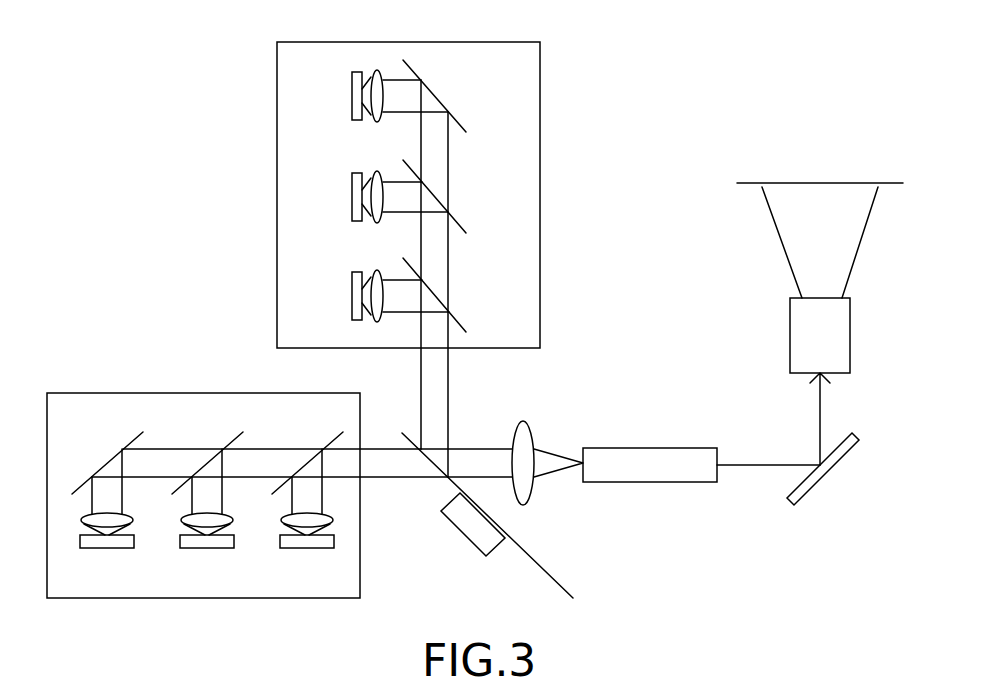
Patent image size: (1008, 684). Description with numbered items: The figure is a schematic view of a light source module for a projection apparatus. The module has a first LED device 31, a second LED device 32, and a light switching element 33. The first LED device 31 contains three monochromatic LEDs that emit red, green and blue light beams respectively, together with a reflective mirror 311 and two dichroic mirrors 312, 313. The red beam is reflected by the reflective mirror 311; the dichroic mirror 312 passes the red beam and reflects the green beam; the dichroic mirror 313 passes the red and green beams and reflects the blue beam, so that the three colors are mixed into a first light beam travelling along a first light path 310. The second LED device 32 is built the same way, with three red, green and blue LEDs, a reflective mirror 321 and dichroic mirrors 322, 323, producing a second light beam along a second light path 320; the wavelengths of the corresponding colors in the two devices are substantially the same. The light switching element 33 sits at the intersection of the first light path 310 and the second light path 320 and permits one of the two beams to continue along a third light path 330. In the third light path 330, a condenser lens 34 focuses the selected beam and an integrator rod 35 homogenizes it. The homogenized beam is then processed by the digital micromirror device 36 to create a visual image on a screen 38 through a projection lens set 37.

The first LED device 31 is at (137, 403).
The reflective mirror 311 is at (132, 440).
The dichroic mirror 312 is at (232, 440).
The dichroic mirror 313 is at (332, 440).
The first light path 310 is at (420, 472).
The second LED device 32 is at (438, 52).
The reflective mirror 321 is at (437, 90).
The dichroic mirror 322 is at (435, 193).
The dichroic mirror 323 is at (435, 293).
The second light path 320 is at (428, 410).
The third light path 330 is at (472, 458).
The light switching element 33 is at (515, 558).
The condenser lens 34 is at (525, 488).
The integrator rod 35 is at (667, 458).
The digital micromirror device 36 is at (838, 455).
The projection lens set 37 is at (840, 347).
The screen 38 is at (833, 183).